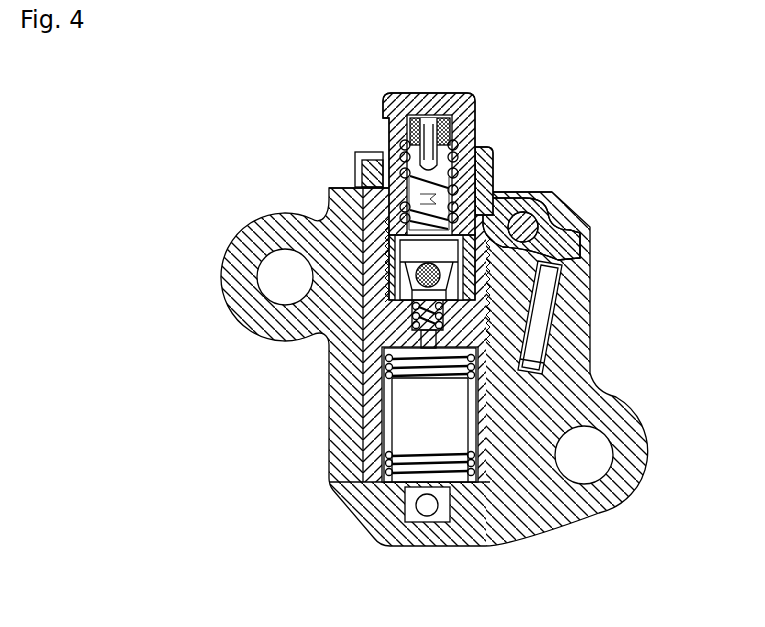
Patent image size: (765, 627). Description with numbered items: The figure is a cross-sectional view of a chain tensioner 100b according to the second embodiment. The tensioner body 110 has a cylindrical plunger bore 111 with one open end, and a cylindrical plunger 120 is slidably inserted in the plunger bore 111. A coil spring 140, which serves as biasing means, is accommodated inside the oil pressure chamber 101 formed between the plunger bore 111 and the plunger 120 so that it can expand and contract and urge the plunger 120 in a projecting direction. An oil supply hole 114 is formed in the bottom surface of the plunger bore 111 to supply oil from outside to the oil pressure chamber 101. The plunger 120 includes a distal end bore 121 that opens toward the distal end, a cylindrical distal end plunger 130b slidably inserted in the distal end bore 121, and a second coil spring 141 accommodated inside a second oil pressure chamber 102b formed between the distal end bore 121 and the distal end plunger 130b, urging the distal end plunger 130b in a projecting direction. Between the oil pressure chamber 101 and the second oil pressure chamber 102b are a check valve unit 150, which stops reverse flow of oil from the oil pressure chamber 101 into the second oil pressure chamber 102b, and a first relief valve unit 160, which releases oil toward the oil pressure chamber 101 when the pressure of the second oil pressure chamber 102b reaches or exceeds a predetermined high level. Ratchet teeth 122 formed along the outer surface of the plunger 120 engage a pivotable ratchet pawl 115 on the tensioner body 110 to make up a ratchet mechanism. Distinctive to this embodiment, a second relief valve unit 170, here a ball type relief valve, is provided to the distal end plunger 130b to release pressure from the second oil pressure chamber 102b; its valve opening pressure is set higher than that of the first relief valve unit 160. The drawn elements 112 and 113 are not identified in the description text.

The chain tensioner 100b is at (185, 125).
The oil pressure chamber 101 is at (412, 401).
The second oil pressure chamber 102b is at (392, 192).
The tensioner body 110 is at (326, 205).
The plunger bore 111 is at (222, 436).
The lower plunger ring 112 is at (385, 470).
The upper plunger ring 113 is at (385, 425).
The oil supply hole 114 is at (427, 515).
The ratchet pawl 115 is at (552, 192).
The plunger 120 is at (385, 275).
The distal end bore 121 is at (480, 186).
The ratchet teeth 122 is at (535, 320).
The distal end plunger 130b is at (474, 112).
The coil spring 140 is at (478, 463).
The second coil spring 141 is at (389, 152).
The check valve unit 150 is at (550, 216).
The first relief valve unit 160 is at (580, 256).
The second relief valve unit 170 is at (385, 120).